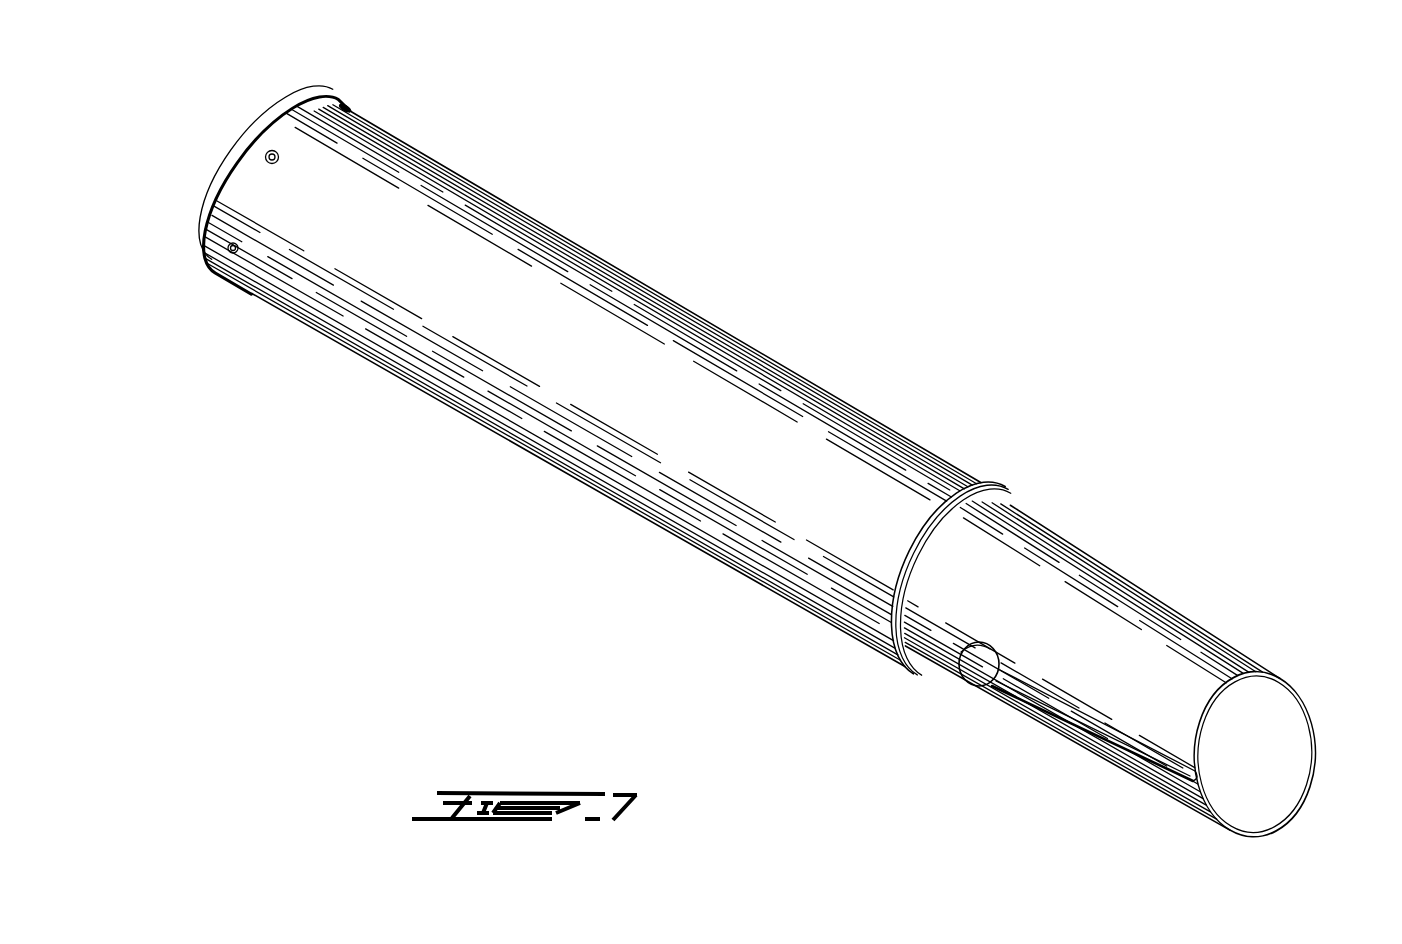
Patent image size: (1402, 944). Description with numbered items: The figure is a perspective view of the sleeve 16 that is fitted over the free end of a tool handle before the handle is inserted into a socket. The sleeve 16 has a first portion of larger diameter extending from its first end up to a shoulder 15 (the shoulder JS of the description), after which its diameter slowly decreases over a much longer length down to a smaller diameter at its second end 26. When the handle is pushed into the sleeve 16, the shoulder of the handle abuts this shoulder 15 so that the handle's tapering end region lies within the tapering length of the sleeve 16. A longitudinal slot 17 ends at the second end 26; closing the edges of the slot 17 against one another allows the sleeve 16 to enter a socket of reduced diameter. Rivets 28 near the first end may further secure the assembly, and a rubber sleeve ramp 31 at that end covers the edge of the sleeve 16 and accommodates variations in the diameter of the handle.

The sleeve 16 is at (684, 362).
The rubber sleeve ramp 31 is at (238, 143).
The rivets 28 is at (282, 157).
The collar 15 is at (1008, 496).
The second end 26 is at (1296, 768).
The longitudinal slot 17 is at (1065, 712).